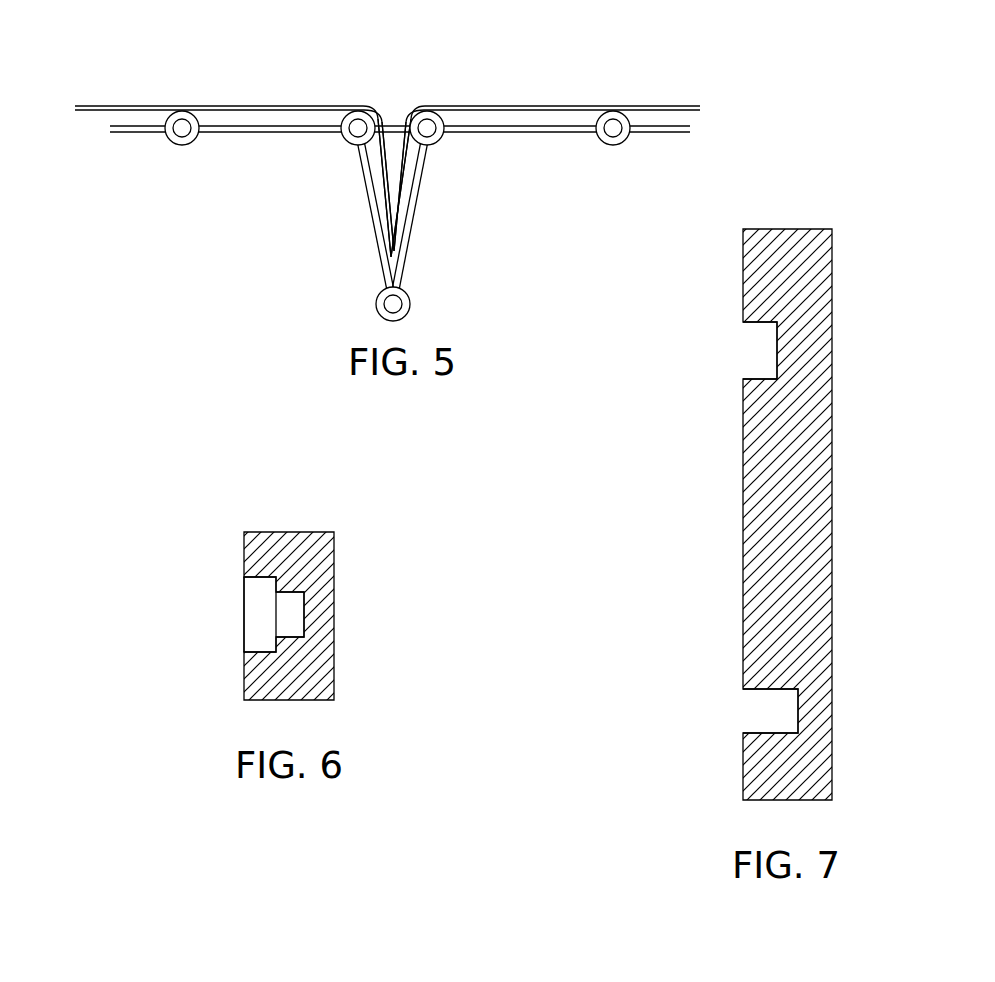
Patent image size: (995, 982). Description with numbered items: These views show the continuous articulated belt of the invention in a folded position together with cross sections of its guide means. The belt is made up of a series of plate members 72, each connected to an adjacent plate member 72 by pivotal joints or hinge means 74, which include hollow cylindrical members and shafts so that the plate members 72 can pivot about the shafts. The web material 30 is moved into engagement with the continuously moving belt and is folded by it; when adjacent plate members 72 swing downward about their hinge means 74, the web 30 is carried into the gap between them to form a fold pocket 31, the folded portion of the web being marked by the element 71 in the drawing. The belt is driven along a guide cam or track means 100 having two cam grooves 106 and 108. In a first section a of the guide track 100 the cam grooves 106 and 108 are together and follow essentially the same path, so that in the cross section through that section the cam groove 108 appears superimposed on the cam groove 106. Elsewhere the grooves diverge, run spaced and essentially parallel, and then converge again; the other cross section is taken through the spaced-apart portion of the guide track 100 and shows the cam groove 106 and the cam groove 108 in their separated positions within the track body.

In FIG. 5, the web material 30 is at (122, 105).
In FIG. 5, the fold pockets 31 is at (392, 175).
In FIG. 5, the hinge strip 71 is at (373, 157).
In FIG. 5, the plate members 72 is at (373, 198).
In FIG. 5, the hinge means 74 is at (452, 156).
In FIG. 6, the guide track 100 is at (252, 514).
In FIG. 7, the guide track 100 is at (862, 328).
In FIG. 6, the cam groove 106 is at (253, 632).
In FIG. 7, the cam groove 106 is at (753, 359).
In FIG. 6, the cam groove 108 is at (297, 620).
In FIG. 7, the cam groove 108 is at (760, 709).
In FIG. 6, the first section a is at (242, 603).